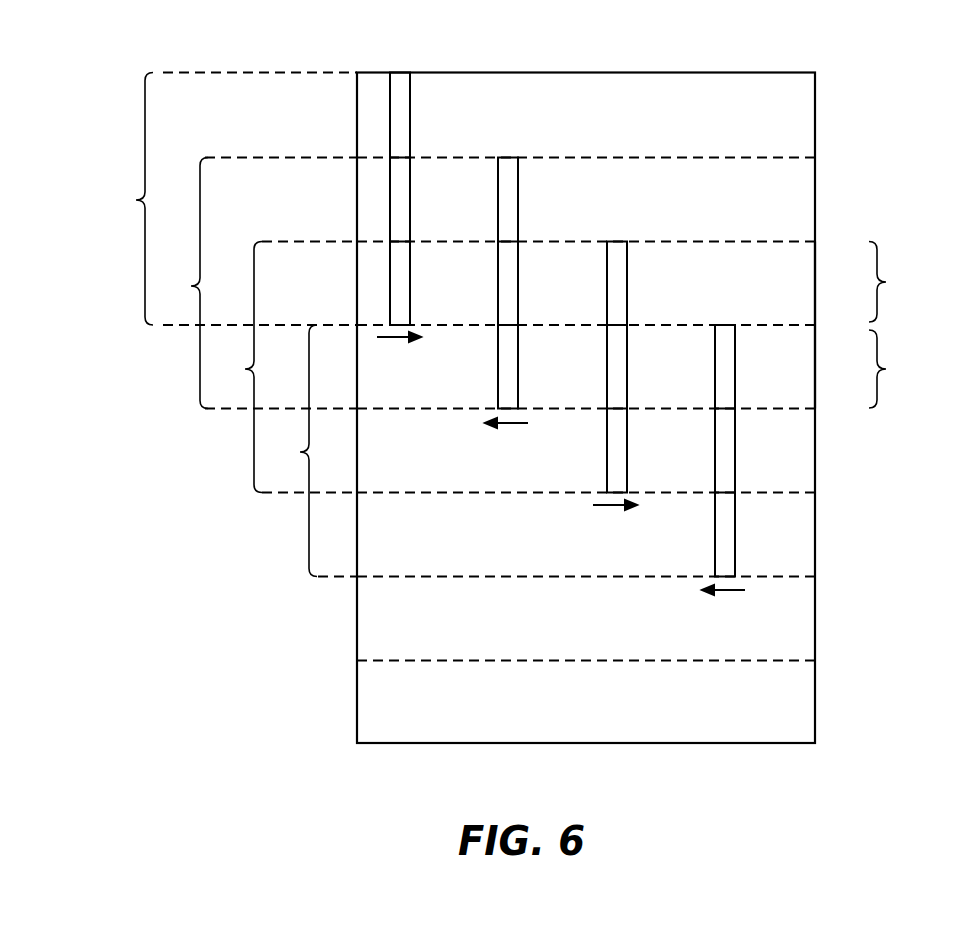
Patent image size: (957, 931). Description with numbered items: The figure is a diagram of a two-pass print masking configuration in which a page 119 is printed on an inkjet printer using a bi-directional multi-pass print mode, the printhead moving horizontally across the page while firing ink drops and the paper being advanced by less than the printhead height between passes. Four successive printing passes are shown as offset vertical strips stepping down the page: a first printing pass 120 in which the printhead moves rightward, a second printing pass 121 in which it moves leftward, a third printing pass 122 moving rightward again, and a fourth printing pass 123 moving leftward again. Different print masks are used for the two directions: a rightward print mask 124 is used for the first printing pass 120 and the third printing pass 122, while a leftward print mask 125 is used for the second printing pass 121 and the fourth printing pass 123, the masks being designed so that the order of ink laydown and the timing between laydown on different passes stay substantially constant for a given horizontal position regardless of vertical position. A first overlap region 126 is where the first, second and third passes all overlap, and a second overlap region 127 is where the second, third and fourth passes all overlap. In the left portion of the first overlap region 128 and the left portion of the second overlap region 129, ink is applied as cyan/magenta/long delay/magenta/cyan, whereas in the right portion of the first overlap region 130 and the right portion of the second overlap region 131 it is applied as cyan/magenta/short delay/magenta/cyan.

The page 119 is at (677, 72).
The first printing pass 120 is at (227, 199).
The second printing pass 121 is at (253, 283).
The third printing pass 122 is at (282, 367).
The fourth printing pass 123 is at (308, 451).
The rightward print mask 124 is at (402, 83).
The leftward print mask 125 is at (507, 167).
The first overlap region 126 is at (898, 282).
The second overlap region 127 is at (898, 369).
The left portion of the first overlap region 128 is at (373, 295).
The left portion of the second overlap region 129 is at (372, 375).
The right portion of the first overlap region 130 is at (802, 278).
The right portion of the second overlap region 131 is at (802, 362).